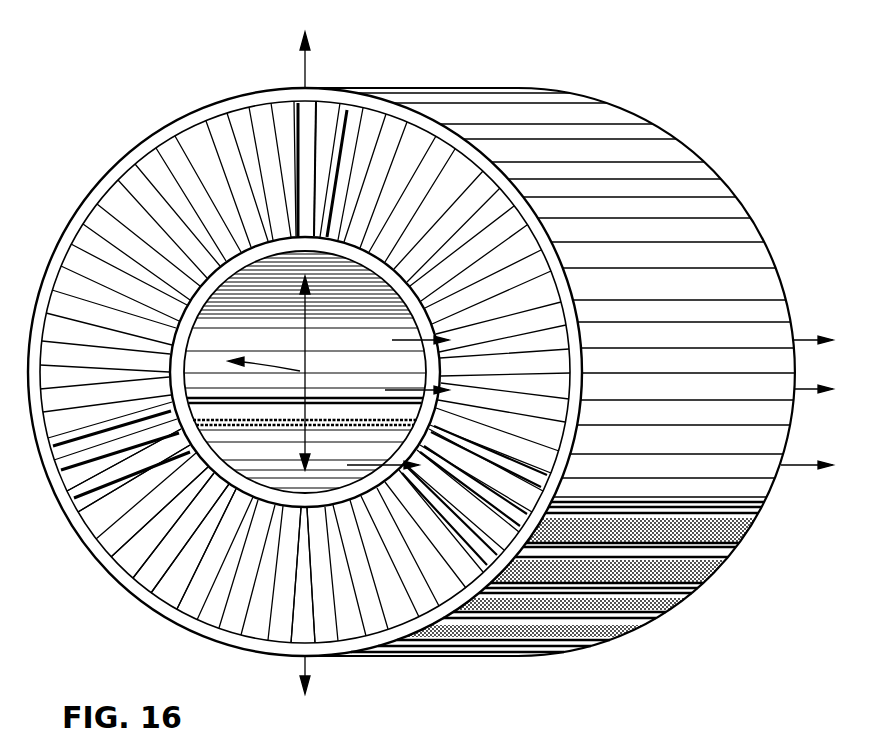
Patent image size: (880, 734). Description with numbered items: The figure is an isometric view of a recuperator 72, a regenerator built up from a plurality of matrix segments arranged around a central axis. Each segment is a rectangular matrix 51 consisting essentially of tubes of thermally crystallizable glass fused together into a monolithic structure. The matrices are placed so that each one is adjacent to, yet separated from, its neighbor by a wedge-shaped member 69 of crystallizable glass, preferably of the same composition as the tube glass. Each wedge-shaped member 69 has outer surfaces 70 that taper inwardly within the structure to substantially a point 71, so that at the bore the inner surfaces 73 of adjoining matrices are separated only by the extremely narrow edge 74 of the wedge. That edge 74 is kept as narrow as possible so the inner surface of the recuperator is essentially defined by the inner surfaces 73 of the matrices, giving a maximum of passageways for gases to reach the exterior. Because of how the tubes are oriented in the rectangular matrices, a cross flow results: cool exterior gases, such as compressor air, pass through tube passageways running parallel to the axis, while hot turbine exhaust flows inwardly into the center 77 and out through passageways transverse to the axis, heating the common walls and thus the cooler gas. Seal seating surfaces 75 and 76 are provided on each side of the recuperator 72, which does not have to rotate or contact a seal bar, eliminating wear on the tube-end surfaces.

The recuperator 72 is at (84, 133).
The seal seating surface 75 is at (203, 118).
The center 77 is at (420, 362).
The seal seating surface 76 is at (172, 386).
The inner surface 73 is at (393, 434).
The edge 74 is at (333, 423).
The point 71 is at (305, 512).
The wedge-shaped member 69 is at (73, 482).
The rectangular matrix 51 is at (150, 571).
The outer surface 70 is at (349, 626).